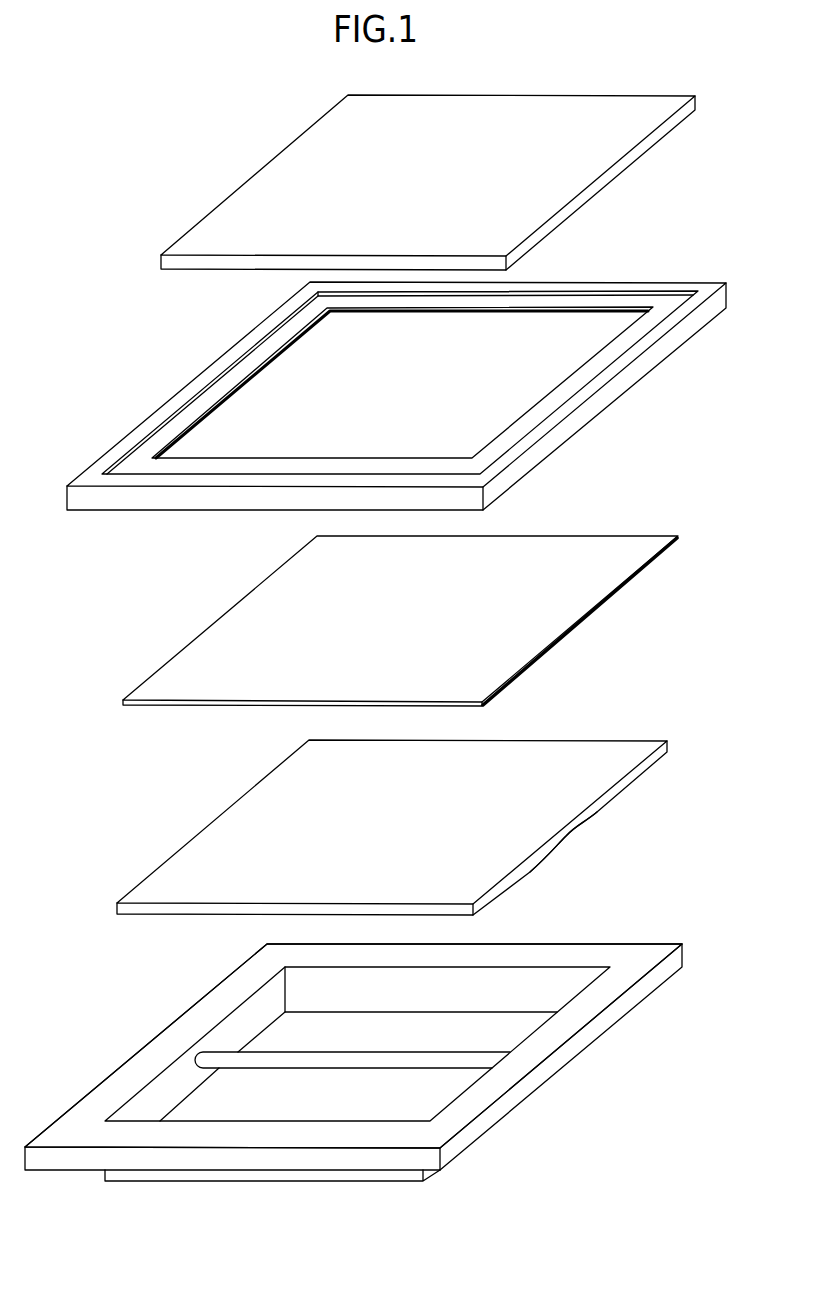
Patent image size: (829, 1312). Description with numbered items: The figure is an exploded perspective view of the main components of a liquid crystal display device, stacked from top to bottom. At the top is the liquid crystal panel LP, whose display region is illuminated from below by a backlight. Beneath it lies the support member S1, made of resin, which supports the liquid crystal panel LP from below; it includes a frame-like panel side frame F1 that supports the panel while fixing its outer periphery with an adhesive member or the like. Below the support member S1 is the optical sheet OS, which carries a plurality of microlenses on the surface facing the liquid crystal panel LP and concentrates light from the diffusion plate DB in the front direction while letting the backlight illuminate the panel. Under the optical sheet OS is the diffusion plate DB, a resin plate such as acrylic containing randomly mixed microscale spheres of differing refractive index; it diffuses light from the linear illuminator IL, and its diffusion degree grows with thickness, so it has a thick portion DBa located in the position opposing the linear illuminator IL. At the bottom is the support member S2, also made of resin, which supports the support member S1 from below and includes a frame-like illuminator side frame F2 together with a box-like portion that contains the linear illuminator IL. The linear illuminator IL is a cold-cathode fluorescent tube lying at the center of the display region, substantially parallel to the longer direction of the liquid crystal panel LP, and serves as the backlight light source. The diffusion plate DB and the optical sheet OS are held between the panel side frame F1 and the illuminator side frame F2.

The liquid crystal panel LP is at (678, 120).
The support member S1 is at (690, 325).
The panel side frame F1 is at (232, 381).
The optical sheet OS is at (638, 553).
The diffusion plate DB is at (652, 760).
The thick portion DBa is at (573, 828).
The support member S2 is at (660, 973).
The illuminator side frame F2 is at (183, 1030).
The linear illuminator IL is at (273, 1060).